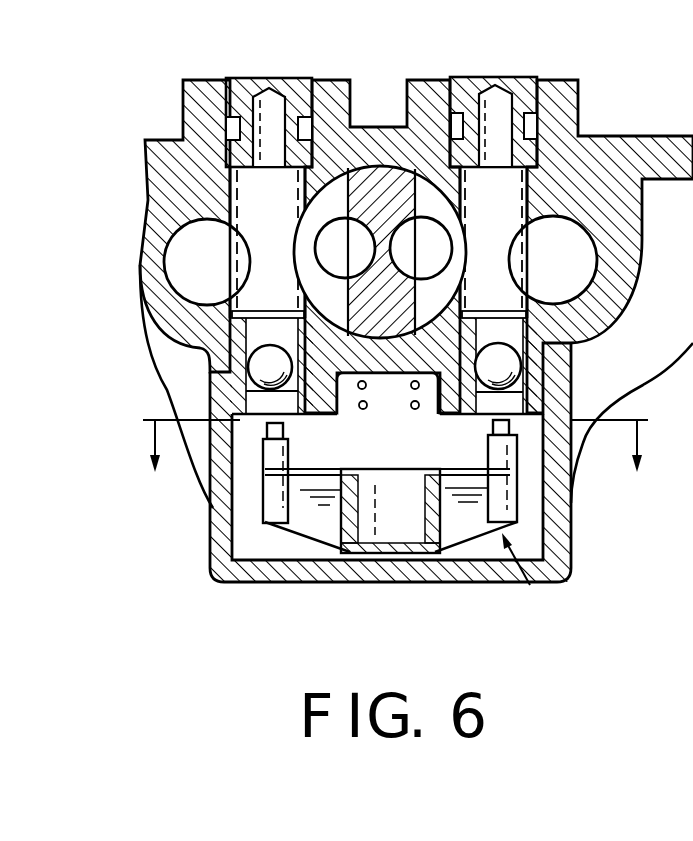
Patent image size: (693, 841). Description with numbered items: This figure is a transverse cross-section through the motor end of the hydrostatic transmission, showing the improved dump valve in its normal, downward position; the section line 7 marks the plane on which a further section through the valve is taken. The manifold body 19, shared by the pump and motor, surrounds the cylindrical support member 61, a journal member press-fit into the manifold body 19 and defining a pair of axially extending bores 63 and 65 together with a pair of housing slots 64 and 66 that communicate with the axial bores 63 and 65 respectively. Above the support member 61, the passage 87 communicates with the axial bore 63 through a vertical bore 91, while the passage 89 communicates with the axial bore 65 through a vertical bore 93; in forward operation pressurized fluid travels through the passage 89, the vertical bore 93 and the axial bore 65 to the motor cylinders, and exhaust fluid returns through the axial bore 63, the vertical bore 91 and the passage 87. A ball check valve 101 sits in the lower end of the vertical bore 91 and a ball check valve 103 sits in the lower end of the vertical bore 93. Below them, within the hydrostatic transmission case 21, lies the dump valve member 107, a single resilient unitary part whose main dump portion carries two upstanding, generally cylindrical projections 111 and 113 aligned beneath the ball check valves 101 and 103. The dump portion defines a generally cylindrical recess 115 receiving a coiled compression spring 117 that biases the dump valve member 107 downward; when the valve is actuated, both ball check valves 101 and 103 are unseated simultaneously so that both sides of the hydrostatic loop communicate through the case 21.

The section line 7- 7 is at (395, 441).
The manifold body 19 is at (146, 157).
The hydrostatic transmission case 21 is at (262, 536).
The cylindrical support member 61 is at (400, 203).
The axial bore 63 is at (358, 268).
The housing slot 64 is at (338, 192).
The axial bore 65 is at (425, 232).
The housing slot 66 is at (448, 282).
The passage 87 is at (176, 265).
The passage 89 is at (578, 275).
The vertical bore 91 is at (238, 195).
The vertical bore 93 is at (540, 188).
The ball check valve 101 is at (245, 368).
The ball check valve 103 is at (507, 363).
The dump valve member 107 is at (530, 585).
The upstanding projection 111 is at (284, 436).
The upstanding projection 113 is at (493, 432).
The cylindrical recess 115 is at (420, 508).
The coiled compression spring 117 is at (408, 387).